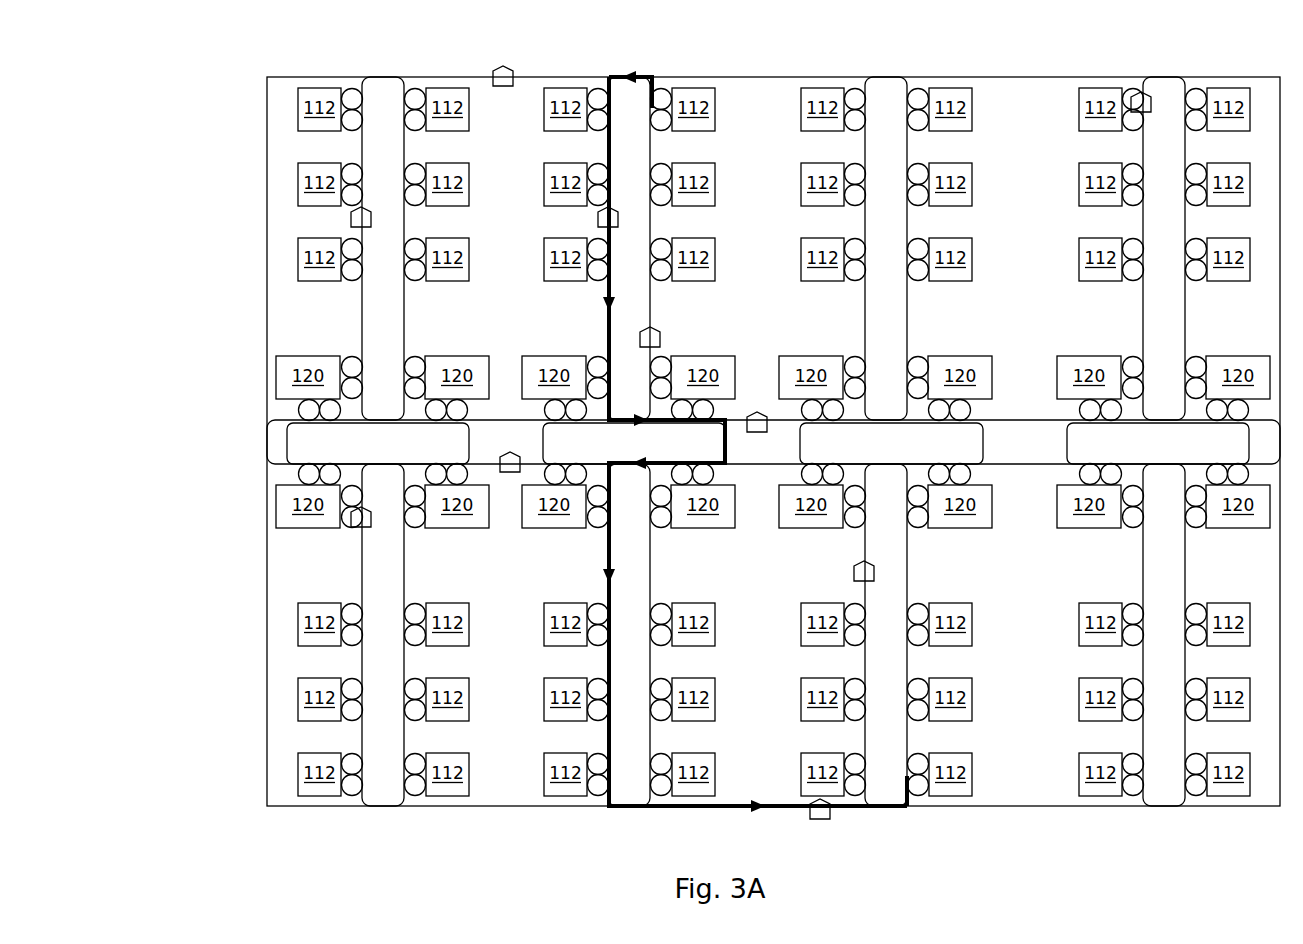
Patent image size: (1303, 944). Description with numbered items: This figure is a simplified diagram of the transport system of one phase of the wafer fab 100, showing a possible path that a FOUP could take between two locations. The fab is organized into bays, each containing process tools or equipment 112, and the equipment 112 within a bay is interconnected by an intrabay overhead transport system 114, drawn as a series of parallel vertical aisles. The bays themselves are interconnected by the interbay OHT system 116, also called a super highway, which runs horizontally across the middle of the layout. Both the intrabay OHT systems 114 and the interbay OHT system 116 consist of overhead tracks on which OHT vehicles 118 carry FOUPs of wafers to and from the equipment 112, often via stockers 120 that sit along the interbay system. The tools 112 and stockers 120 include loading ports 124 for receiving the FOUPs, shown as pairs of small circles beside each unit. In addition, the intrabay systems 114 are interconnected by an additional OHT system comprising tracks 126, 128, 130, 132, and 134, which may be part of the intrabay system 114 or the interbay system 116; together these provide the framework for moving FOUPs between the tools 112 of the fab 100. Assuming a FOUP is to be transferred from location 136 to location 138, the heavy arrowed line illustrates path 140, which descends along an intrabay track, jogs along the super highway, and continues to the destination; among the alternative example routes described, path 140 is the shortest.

The fab 100 is at (219, 116).
The equipment 112 is at (774, 442).
The intrabay overhead transport system 114 is at (362, 333).
The interbay OHT system 116 is at (1022, 466).
The OHT vehicle 118 is at (510, 66).
The stocker 120 is at (773, 442).
The loading port 124 is at (352, 78).
The track 126 is at (748, 75).
The track 128 is at (298, 452).
The track 130 is at (553, 452).
The track 132 is at (808, 452).
The track 134 is at (1078, 452).
The location 136 is at (700, 76).
The location 138 is at (958, 808).
The path 140 is at (752, 442).